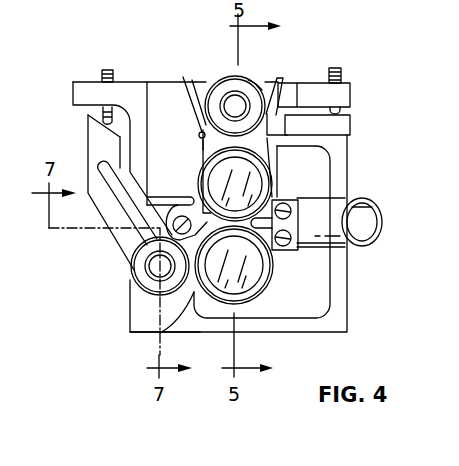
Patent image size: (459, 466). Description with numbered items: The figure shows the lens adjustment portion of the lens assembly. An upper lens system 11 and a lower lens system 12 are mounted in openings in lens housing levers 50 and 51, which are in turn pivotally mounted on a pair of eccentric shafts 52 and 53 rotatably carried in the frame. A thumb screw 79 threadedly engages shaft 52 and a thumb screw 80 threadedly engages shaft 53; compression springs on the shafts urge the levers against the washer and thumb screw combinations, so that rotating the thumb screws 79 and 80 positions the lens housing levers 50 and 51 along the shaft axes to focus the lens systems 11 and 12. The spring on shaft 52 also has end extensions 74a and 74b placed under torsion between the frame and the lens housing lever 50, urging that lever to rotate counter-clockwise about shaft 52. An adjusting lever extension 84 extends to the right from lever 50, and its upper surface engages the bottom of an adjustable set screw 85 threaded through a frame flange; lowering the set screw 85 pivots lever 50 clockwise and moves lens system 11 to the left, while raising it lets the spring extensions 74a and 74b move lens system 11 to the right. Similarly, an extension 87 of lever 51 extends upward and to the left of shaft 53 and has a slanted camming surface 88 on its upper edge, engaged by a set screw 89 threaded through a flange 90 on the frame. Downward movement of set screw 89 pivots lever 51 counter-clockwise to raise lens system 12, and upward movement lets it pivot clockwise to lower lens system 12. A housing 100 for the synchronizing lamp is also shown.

The lens system 11 is at (243, 195).
The lens system 12 is at (243, 265).
The lens housing lever 50 is at (203, 147).
The lens housing lever 51 is at (160, 333).
The eccentric shaft 52 is at (232, 92).
The eccentric shaft 53 is at (147, 269).
The spring end extension 74a is at (280, 78).
The spring end extension 74b is at (187, 82).
The thumb screw 79 is at (249, 79).
The thumb screw 80 is at (145, 293).
The adjusting lever extension 84 is at (353, 122).
The set screw 85 is at (336, 68).
The extension 87 is at (90, 137).
The camming surface 88 is at (88, 115).
The set screw 89 is at (108, 70).
The flange 90 is at (82, 85).
The housing 100 is at (362, 198).